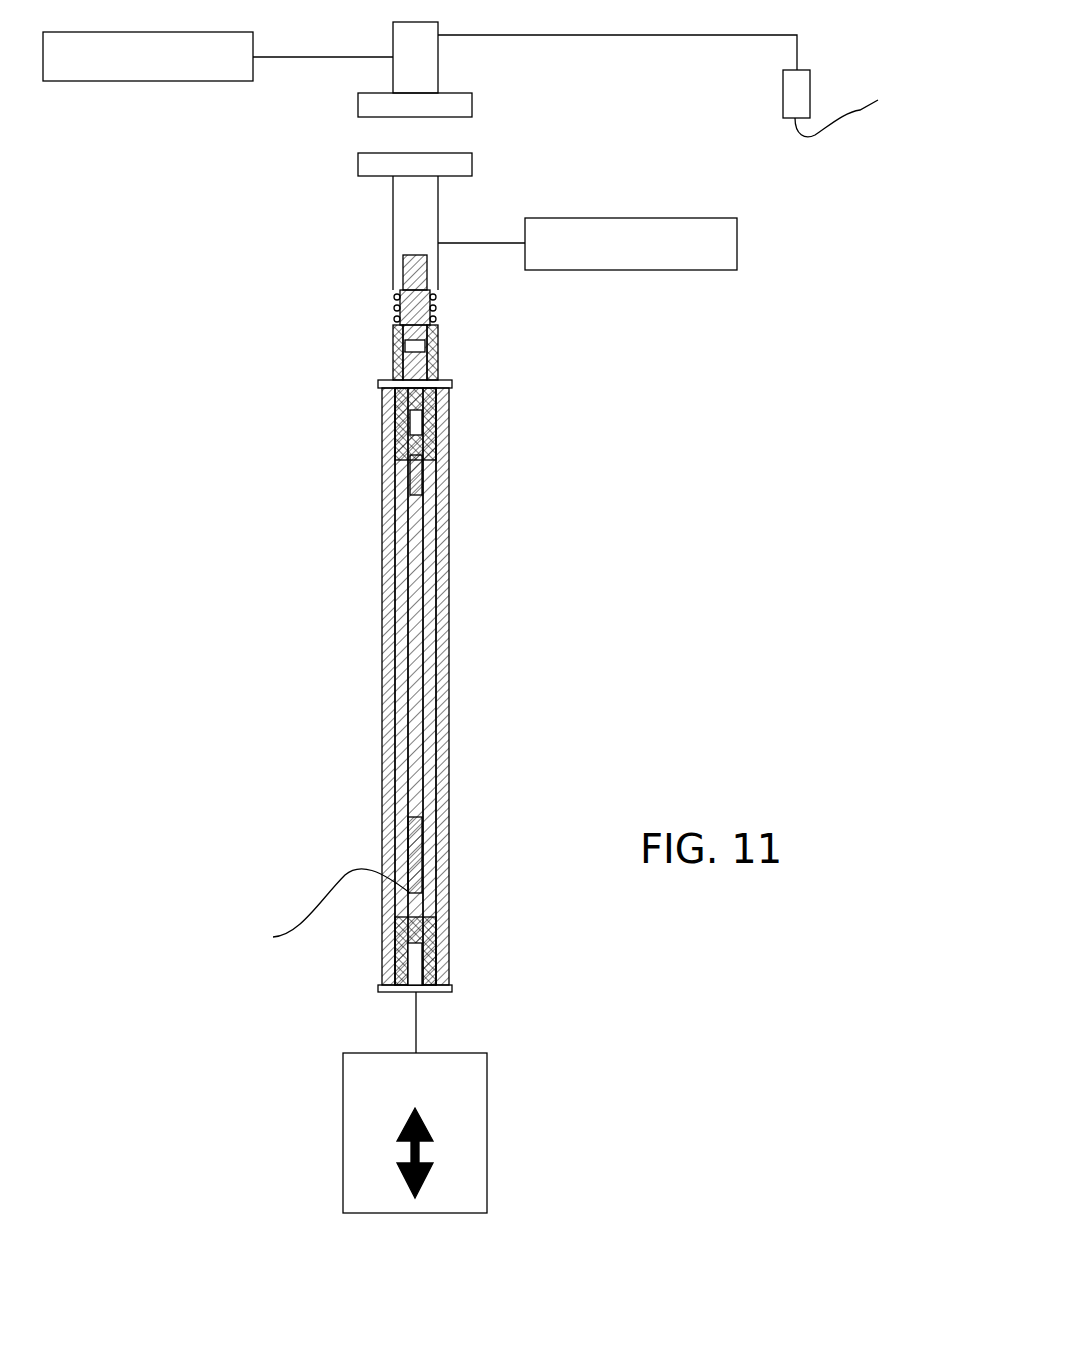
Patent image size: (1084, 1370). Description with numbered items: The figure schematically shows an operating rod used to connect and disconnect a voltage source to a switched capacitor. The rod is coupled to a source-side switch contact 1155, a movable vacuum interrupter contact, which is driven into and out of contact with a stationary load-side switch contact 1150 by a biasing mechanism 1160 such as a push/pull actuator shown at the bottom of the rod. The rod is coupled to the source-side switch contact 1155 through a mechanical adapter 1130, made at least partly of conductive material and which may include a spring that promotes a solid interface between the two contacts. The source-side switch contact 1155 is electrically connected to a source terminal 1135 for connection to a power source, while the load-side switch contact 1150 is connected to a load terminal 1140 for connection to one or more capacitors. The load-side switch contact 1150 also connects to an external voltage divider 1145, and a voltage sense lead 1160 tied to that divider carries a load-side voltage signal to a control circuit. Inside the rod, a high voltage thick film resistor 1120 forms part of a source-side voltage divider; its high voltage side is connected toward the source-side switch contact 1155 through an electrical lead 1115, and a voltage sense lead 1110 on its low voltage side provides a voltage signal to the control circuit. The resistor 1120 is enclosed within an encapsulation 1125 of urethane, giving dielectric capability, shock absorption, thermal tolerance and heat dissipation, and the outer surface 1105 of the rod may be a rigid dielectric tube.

The outer surface 1105 is at (379, 697).
The voltage sense lead 1110 is at (285, 864).
The electrical lead 1115 is at (388, 470).
The resistor 1120 is at (417, 713).
The encapsulation 1125 is at (440, 500).
The mechanical adapter 1130 is at (440, 343).
The source terminal 1135 is at (737, 240).
The load terminal 1140 is at (165, 82).
The voltage divider 1145 is at (810, 95).
The load-side switch contact 1150 is at (455, 110).
The source-side switch contact 1155 is at (328, 227).
The biasing mechanism 1160 is at (878, 100).